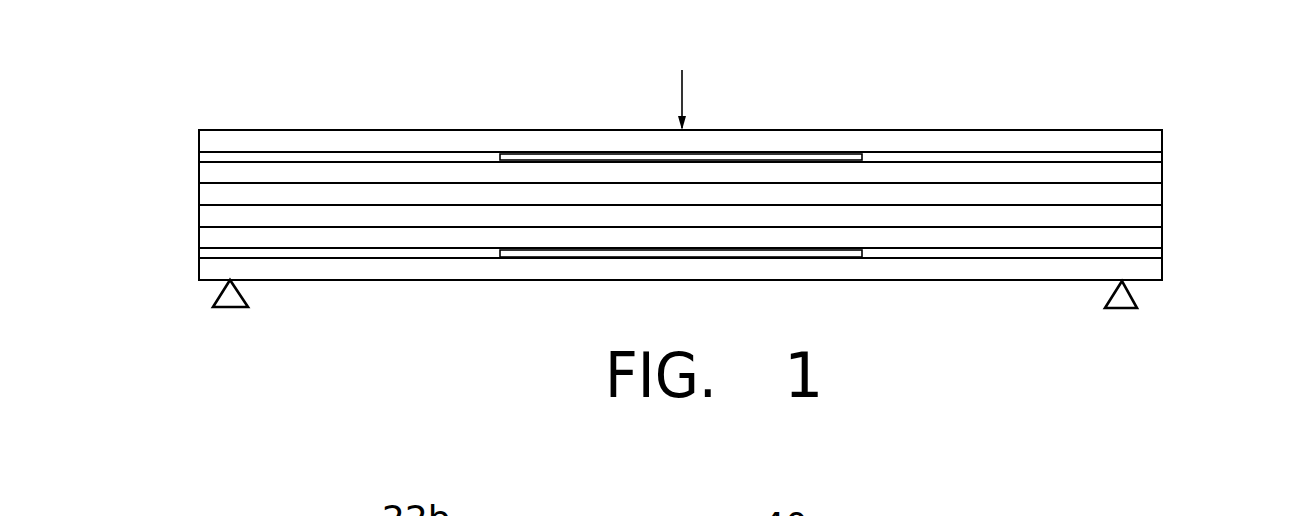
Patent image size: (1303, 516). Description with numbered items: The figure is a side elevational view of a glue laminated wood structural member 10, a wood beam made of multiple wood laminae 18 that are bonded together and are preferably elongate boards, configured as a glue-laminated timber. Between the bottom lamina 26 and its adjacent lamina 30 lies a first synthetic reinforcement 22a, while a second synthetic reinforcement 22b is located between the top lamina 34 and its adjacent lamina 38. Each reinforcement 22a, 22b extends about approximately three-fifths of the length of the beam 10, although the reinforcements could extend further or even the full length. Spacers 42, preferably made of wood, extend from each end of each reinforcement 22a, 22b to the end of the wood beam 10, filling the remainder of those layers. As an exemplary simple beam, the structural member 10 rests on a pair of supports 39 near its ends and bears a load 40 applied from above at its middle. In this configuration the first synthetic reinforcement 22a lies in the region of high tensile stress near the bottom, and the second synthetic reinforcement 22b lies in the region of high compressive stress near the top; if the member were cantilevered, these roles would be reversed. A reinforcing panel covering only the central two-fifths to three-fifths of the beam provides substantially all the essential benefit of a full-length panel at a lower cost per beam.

The glue laminated wood structural member 10 is at (188, 113).
The wood laminae 18 is at (218, 220).
The first synthetic reinforcement 22a is at (582, 255).
The second synthetic reinforcement 22b is at (540, 157).
The bottom lamina 26 is at (1145, 270).
The adjacent lamina 30 is at (1137, 237).
The top lamina 34 is at (1153, 142).
The adjacent lamina 38 is at (1145, 170).
The supports 39 is at (228, 297).
The load 40 is at (682, 85).
The spacers 42 is at (212, 155).